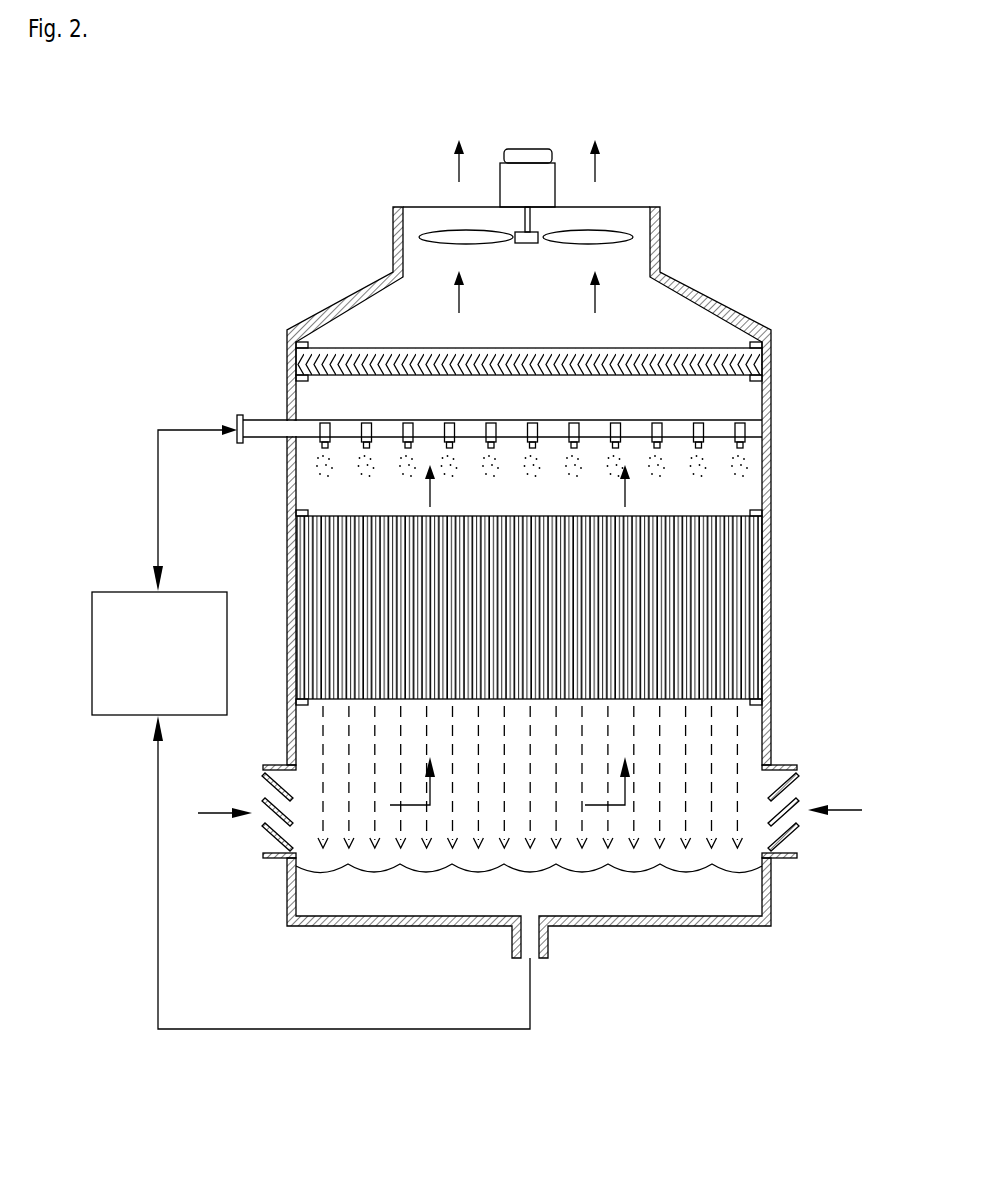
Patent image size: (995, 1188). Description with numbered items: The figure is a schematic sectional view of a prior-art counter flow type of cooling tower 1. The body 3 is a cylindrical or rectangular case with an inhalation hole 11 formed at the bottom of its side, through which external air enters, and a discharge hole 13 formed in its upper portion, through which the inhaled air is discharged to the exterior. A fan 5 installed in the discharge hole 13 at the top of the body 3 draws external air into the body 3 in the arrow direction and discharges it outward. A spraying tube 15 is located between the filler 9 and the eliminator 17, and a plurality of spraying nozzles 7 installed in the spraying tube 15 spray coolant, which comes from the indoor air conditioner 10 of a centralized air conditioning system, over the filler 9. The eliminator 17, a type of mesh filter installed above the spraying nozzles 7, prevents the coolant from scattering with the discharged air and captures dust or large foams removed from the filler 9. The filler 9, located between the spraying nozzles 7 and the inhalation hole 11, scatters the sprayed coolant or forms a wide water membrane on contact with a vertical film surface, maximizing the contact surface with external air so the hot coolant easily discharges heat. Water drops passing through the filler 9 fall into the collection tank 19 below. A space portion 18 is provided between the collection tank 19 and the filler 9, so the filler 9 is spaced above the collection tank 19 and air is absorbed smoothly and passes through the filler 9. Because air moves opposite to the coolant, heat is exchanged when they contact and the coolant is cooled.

The counter flow type of cooling tower 1 is at (534, 540).
The body 3 is at (772, 455).
The fan 5 is at (451, 238).
The spraying nozzle 7 is at (318, 431).
The filler 9 is at (716, 603).
The indoor air conditioner 10 is at (122, 591).
The inhalation hole 11 is at (790, 787).
The discharge hole 13 is at (628, 215).
The spraying tube 15 is at (267, 427).
The eliminator 17 is at (345, 352).
The space portion 18 is at (720, 737).
The collection tank 19 is at (690, 914).